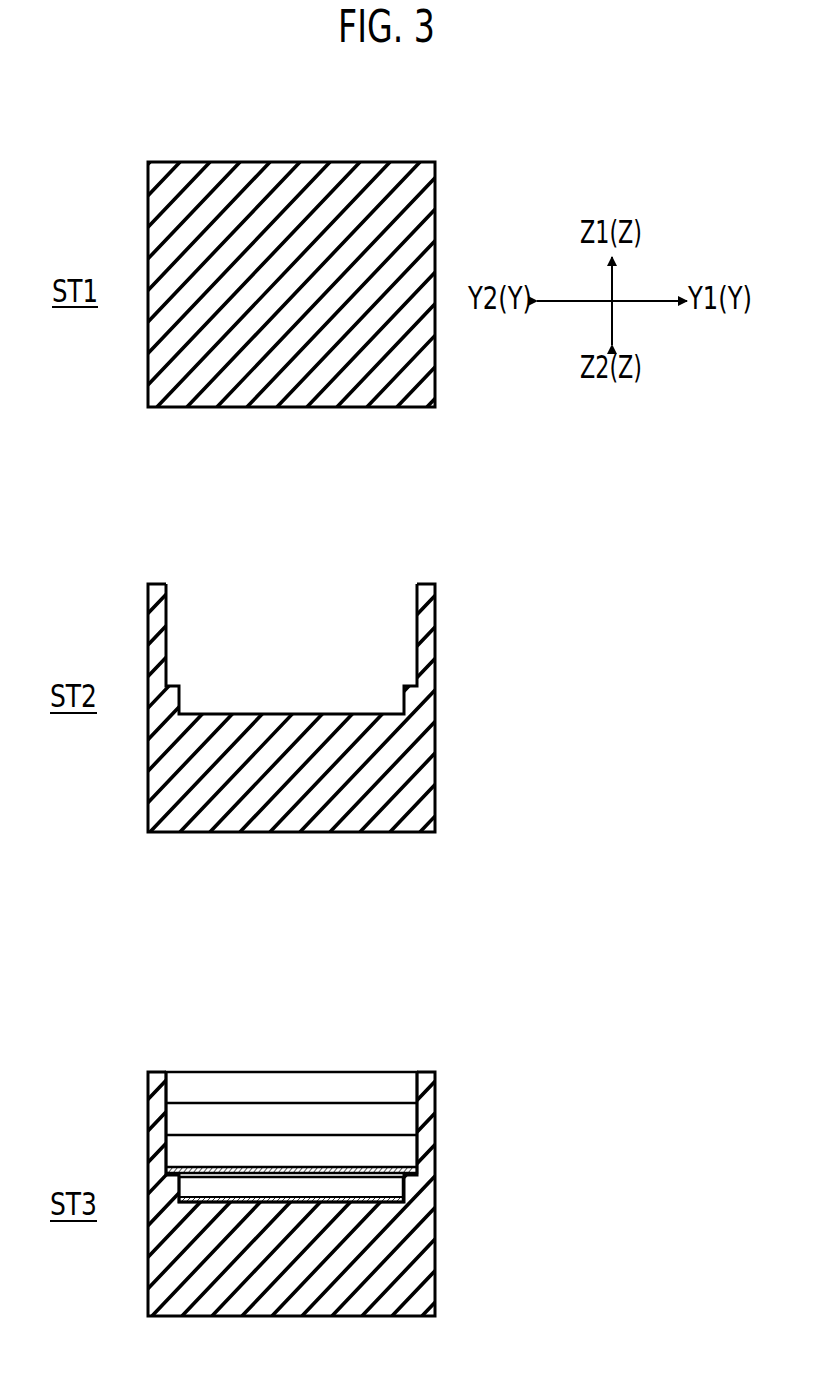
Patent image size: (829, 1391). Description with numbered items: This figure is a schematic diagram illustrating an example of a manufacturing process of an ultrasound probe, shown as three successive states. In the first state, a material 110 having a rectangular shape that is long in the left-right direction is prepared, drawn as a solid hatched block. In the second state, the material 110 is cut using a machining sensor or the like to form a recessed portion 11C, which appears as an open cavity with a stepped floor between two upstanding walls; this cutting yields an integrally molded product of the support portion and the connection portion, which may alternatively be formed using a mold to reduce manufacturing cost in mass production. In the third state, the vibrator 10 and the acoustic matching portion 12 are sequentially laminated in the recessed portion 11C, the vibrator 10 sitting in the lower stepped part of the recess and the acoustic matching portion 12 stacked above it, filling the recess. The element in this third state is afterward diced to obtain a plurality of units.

The material 110 is at (420, 242).
The recessed portion 11C is at (370, 607).
The acoustic matching portion 12 is at (247, 1069).
The vibrator 10 is at (408, 1187).